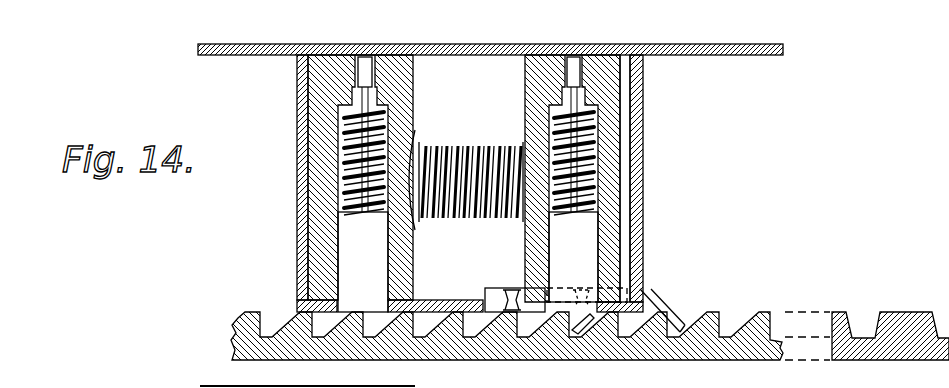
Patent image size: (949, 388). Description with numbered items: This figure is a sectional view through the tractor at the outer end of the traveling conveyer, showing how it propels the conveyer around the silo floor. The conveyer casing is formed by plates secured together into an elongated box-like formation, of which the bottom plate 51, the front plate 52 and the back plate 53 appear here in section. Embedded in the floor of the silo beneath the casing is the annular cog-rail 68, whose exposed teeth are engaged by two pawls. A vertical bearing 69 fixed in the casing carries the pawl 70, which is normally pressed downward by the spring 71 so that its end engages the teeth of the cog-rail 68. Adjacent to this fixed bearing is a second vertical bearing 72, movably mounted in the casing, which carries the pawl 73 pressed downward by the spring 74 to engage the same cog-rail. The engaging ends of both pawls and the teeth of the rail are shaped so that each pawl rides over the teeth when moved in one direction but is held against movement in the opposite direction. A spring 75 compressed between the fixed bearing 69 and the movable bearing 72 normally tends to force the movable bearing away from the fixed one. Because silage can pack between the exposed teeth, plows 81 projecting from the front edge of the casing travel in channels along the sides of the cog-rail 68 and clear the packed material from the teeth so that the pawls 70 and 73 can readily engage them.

The bottom plate 51 is at (430, 300).
The front plate 52 is at (298, 150).
The back plate 53 is at (641, 125).
The annular cog-rail 68 is at (650, 345).
The vertical bearing 69 is at (316, 88).
The pawl 70 is at (347, 250).
The spring 71 is at (343, 172).
The vertical bearing 72 is at (605, 72).
The pawl 73 is at (578, 257).
The spring 74 is at (548, 122).
The spring 75 is at (458, 218).
The plow 81 is at (657, 302).